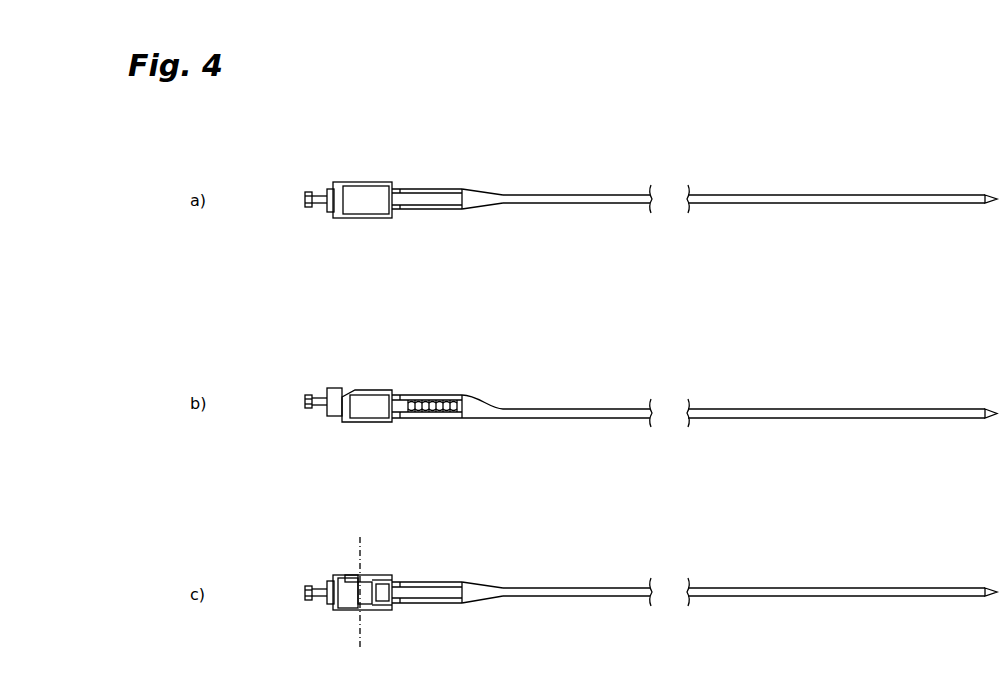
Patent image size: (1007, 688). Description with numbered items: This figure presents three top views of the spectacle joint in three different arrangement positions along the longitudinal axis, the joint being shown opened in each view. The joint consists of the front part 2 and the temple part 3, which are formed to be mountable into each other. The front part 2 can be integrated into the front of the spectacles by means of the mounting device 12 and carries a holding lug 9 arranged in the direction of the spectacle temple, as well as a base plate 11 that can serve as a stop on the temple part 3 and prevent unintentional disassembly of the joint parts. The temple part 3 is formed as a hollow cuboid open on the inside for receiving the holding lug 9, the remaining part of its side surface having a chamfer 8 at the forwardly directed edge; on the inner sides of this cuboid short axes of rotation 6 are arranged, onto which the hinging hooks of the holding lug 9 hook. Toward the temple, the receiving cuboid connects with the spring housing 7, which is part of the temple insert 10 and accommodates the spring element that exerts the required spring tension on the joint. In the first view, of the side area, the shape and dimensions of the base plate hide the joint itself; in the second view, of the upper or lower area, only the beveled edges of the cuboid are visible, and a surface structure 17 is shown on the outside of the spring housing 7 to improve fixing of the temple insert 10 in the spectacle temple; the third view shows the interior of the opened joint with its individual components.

The front part 2 is at (314, 190).
The temple part 3 is at (365, 198).
The axes of rotation 6 is at (366, 592).
The spring housing 7 is at (433, 200).
The chamfer 8 is at (373, 590).
The holding lug 9 is at (354, 595).
The temple insert 10 is at (866, 197).
The base plate 11 is at (337, 208).
The mounting device 12 is at (304, 189).
The surface structure 17 is at (435, 398).